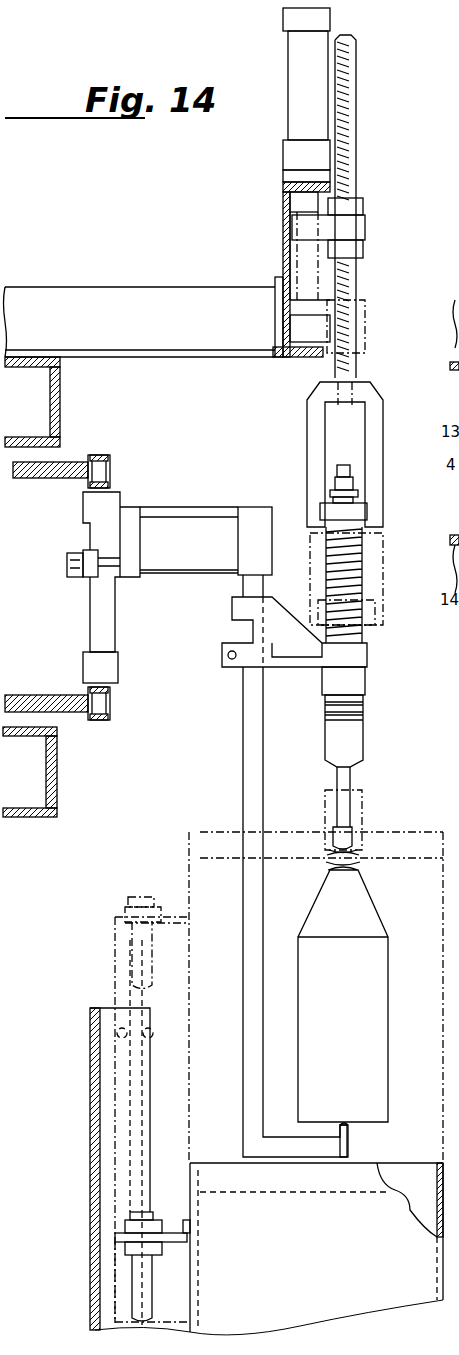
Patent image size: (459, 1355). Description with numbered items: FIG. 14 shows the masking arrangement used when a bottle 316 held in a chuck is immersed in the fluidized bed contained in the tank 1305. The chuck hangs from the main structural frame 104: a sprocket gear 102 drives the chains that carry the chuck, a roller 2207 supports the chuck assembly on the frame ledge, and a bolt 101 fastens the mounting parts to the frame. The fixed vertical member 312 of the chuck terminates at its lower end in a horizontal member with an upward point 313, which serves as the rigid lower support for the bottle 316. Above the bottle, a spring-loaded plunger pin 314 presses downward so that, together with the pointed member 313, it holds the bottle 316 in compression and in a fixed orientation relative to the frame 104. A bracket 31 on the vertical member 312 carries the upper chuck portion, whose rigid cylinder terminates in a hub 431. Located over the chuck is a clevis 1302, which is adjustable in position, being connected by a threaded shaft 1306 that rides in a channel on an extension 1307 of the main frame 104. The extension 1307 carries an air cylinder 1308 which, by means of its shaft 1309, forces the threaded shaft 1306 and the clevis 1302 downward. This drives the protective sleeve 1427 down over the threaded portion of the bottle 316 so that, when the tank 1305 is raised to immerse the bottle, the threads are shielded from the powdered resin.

The air cylinder 1308 is at (300, 112).
The extension of the main frame 1307 is at (290, 172).
The shaft 1309 is at (305, 208).
The threaded shaft 1306 is at (352, 148).
The main structural frame 104 is at (57, 393).
The sprocket gear 102 is at (68, 470).
The bolt 101 is at (112, 470).
The roller 2207 is at (72, 560).
The clevis 1302 is at (317, 432).
The hub 431 is at (333, 505).
The bracket 31 is at (352, 657).
The vertical member 312 is at (250, 740).
The pointed member 313 is at (350, 1134).
The protective sleeve 1427 is at (348, 745).
The plunger pin 314 is at (345, 838).
The bottle 316 is at (357, 1035).
The tank 1305 is at (200, 872).